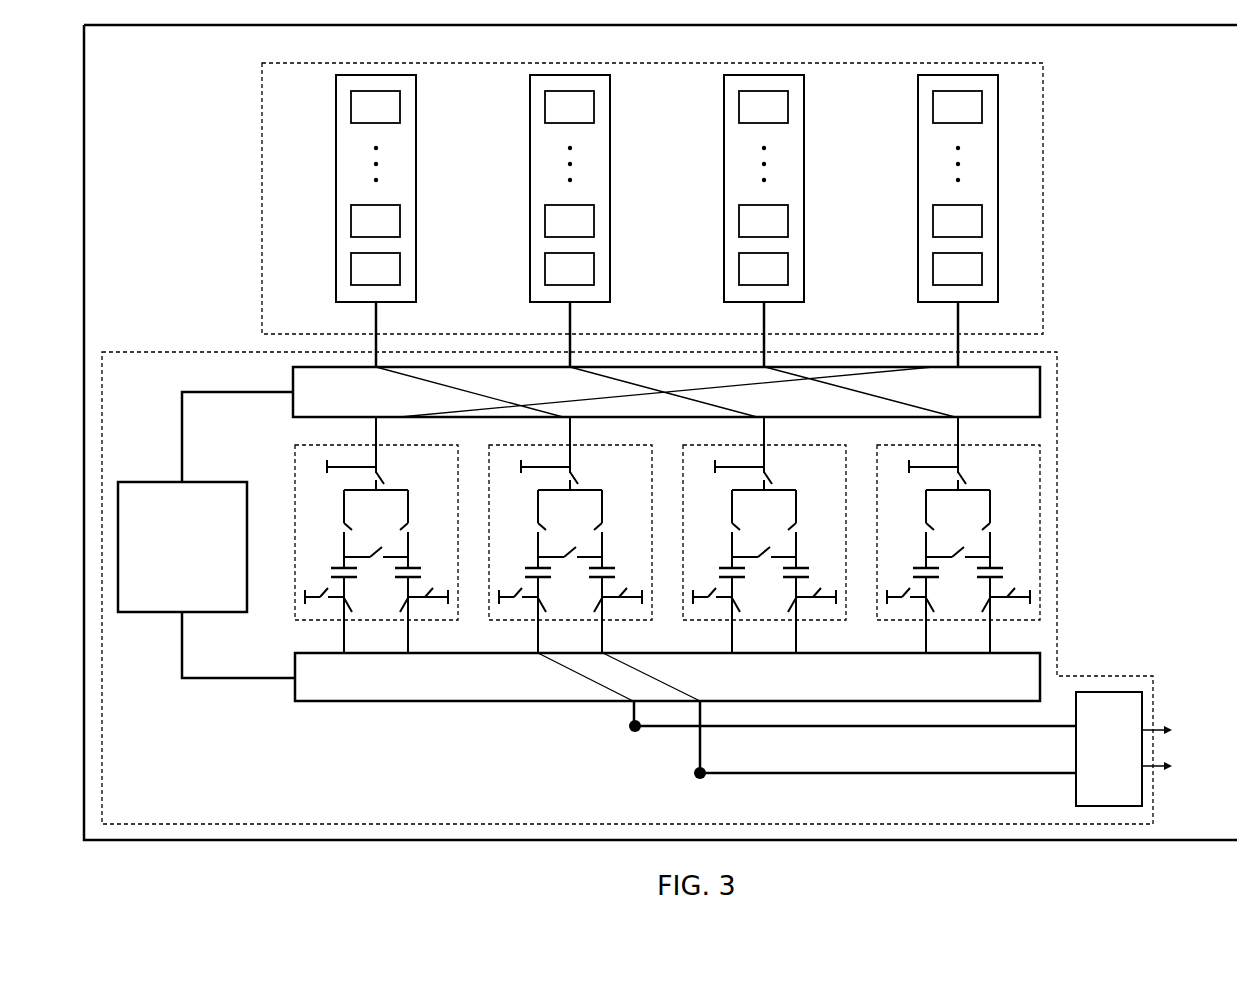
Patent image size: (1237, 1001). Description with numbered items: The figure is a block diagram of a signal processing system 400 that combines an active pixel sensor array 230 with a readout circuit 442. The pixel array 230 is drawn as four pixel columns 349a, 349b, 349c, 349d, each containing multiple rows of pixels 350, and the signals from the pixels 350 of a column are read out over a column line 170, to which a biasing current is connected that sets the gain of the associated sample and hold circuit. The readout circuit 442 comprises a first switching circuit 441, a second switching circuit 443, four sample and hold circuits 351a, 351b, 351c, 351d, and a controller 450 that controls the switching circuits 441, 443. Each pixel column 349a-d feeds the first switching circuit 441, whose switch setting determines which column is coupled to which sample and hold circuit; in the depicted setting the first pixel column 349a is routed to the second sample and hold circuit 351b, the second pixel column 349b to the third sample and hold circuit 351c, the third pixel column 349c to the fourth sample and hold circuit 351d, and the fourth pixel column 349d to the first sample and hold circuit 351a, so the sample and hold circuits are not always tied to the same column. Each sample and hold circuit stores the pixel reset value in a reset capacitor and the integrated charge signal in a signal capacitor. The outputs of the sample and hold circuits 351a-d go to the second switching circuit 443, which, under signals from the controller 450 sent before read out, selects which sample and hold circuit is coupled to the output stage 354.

The signal processing system 400 is at (1221, 54).
The pixel array 230 is at (1044, 97).
The first pixel column 349a is at (336, 105).
The second pixel column 349b is at (545, 188).
The third pixel column 349c is at (739, 188).
The fourth pixel column 349d is at (933, 188).
The pixel 350 is at (666, 188).
The column line 170 is at (378, 344).
The first switching circuit 441 is at (1018, 402).
The readout circuit 442 is at (1057, 398).
The controller 450 is at (164, 561).
The first sample and hold circuit 351a is at (446, 465).
The second sample and hold circuit 351b is at (570, 535).
The third sample and hold circuit 351c is at (764, 535).
The fourth sample and hold circuit 351d is at (958, 535).
The second switching circuit 443 is at (1024, 687).
The output stage 354 is at (1091, 760).